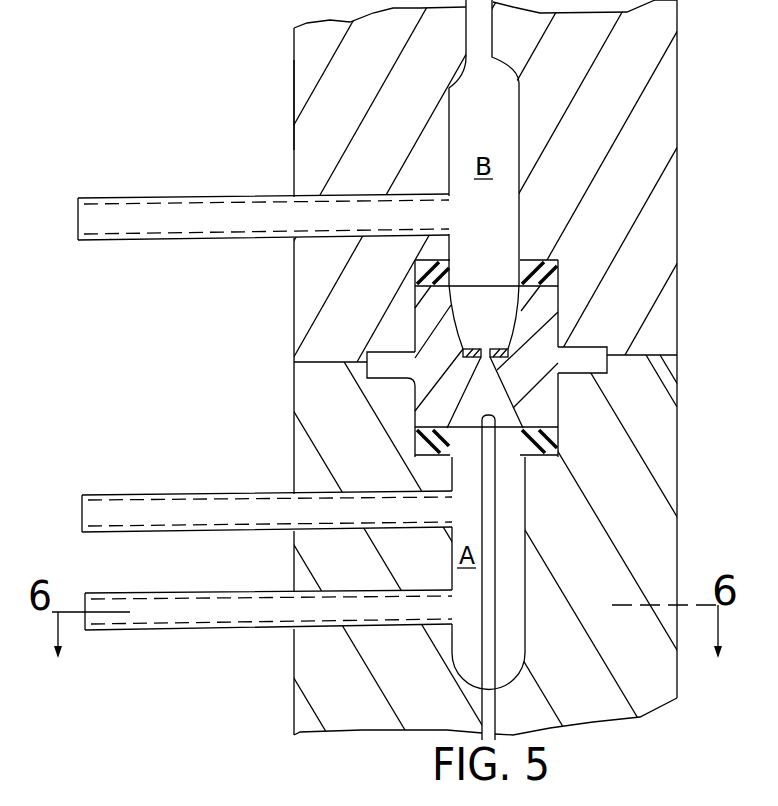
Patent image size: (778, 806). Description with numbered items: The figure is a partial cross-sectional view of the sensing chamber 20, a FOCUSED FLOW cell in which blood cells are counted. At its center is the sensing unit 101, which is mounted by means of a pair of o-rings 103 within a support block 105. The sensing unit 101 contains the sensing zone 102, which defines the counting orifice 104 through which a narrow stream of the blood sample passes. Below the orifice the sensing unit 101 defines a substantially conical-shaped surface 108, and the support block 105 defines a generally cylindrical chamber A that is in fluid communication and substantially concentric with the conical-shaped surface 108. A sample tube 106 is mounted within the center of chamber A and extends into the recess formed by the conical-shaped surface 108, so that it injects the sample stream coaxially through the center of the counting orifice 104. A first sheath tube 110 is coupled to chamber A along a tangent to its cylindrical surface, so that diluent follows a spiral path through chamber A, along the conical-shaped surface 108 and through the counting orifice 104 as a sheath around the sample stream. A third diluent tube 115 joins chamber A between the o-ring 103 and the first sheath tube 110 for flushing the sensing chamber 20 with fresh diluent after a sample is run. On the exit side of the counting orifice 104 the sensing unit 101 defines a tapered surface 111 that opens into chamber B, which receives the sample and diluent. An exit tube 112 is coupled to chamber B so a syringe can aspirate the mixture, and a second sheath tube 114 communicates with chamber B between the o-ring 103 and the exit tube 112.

The sensing chamber 20 is at (289, 132).
The sensing unit 101 is at (413, 307).
The sensing zone 102 is at (465, 365).
The o-rings 103 is at (558, 270).
The counting orifice 104 is at (572, 348).
The support block 105 is at (292, 318).
The sample tube 106 is at (497, 548).
The conical-shaped surface 108 is at (510, 404).
The first sheath tube 110 is at (246, 630).
The tapered surface 111 is at (460, 329).
The exit tube 112 is at (486, 27).
The second sheath tube 114 is at (262, 195).
The third diluent tube 115 is at (212, 495).